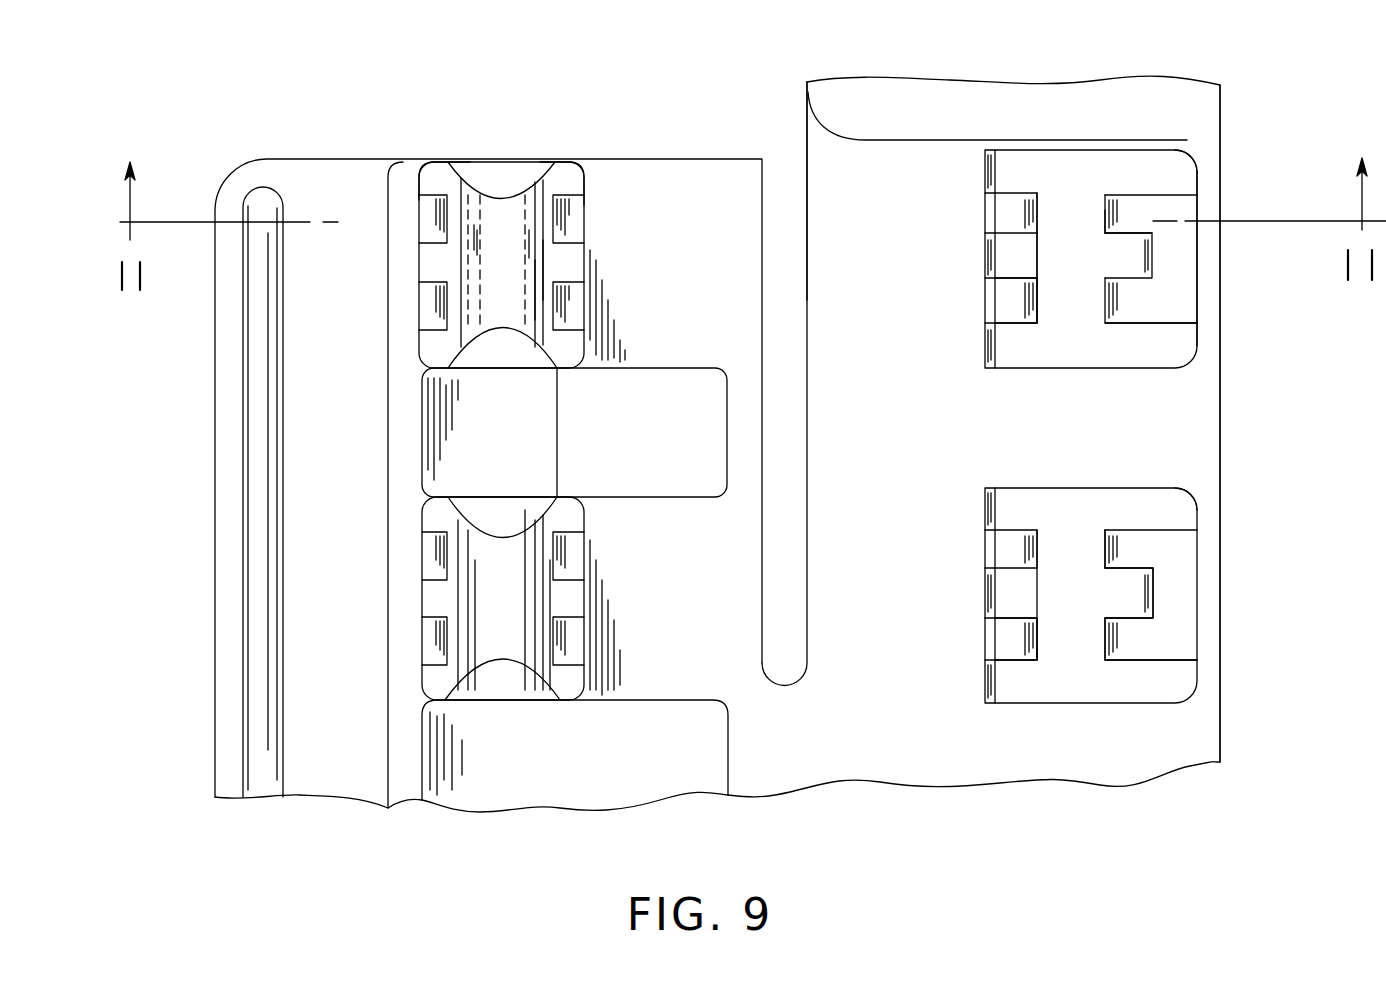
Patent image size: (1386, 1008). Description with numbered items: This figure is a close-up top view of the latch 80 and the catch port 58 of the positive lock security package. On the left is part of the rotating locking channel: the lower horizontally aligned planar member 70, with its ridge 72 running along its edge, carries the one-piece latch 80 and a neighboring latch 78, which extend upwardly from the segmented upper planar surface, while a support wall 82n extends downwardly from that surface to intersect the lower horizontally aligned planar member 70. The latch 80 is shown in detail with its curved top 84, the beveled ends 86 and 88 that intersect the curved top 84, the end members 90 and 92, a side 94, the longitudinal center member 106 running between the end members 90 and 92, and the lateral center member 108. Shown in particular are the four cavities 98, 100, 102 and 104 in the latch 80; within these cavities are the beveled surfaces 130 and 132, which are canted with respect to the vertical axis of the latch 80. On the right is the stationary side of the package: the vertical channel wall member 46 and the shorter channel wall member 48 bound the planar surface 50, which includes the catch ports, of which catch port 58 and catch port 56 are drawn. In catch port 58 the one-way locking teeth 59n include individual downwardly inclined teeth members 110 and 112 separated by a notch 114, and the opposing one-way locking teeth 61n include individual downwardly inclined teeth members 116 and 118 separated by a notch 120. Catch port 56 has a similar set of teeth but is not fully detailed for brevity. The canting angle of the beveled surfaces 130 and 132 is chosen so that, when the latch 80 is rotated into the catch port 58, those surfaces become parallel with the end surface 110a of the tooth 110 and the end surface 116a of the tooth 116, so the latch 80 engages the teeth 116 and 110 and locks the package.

The vertical channel wall member 46 is at (1200, 302).
The shorter channel wall member 48 is at (807, 123).
The planar surface 50 is at (904, 416).
The catch port 56 is at (1135, 600).
The catch port 58 is at (1098, 170).
The one-way locking teeth 59n is at (1165, 195).
The opposing one-way locking teeth 61n is at (997, 193).
The lower horizontally aligned planar member 70 is at (215, 206).
The ridge 72 is at (263, 186).
The latch 78 is at (584, 597).
The latch 80 is at (588, 160).
The support wall 82n is at (658, 370).
The curved top 84 is at (500, 215).
The beveled end 86 is at (505, 350).
The beveled end 88 is at (505, 165).
The end member 90 is at (537, 372).
The end member 92 is at (472, 158).
The side 94 is at (587, 190).
The cavity 98 is at (568, 317).
The cavity 100 is at (572, 212).
The cavity 102 is at (433, 300).
The cavity 104 is at (433, 215).
The longitudinal center member 106 is at (530, 298).
The lateral center member 108 is at (552, 270).
The downwardly inclined teeth member 110 is at (1120, 200).
The end surface 110a is at (1103, 218).
The downwardly inclined teeth member 112 is at (1130, 308).
The notch 114 is at (1130, 255).
The downwardly inclined teeth member 116 is at (1040, 220).
The end surface 116a is at (1040, 233).
The downwardly inclined teeth member 118 is at (1020, 297).
The notch 120 is at (1010, 241).
The beveled surface 130 is at (460, 243).
The beveled surface 132 is at (545, 230).